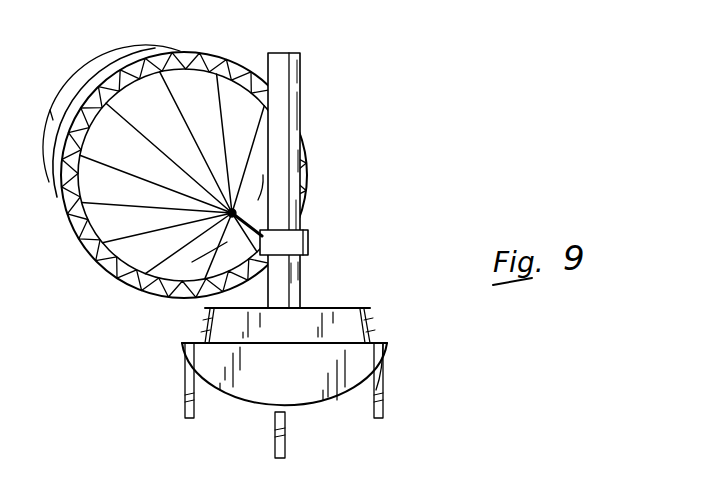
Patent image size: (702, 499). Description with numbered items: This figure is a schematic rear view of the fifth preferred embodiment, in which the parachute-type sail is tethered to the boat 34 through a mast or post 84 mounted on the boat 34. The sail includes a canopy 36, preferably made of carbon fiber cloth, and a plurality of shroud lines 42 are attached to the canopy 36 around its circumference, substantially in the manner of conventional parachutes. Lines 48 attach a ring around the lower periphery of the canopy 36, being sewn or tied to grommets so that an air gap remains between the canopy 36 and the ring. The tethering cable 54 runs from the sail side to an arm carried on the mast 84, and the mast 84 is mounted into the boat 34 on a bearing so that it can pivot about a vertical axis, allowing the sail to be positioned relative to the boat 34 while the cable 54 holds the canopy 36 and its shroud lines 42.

The canopy 36 is at (95, 65).
The shroud lines 42 is at (187, 95).
The lines 48 is at (227, 58).
The tethering cable 54 is at (305, 200).
The mast 84 is at (289, 102).
The boat 34 is at (337, 304).